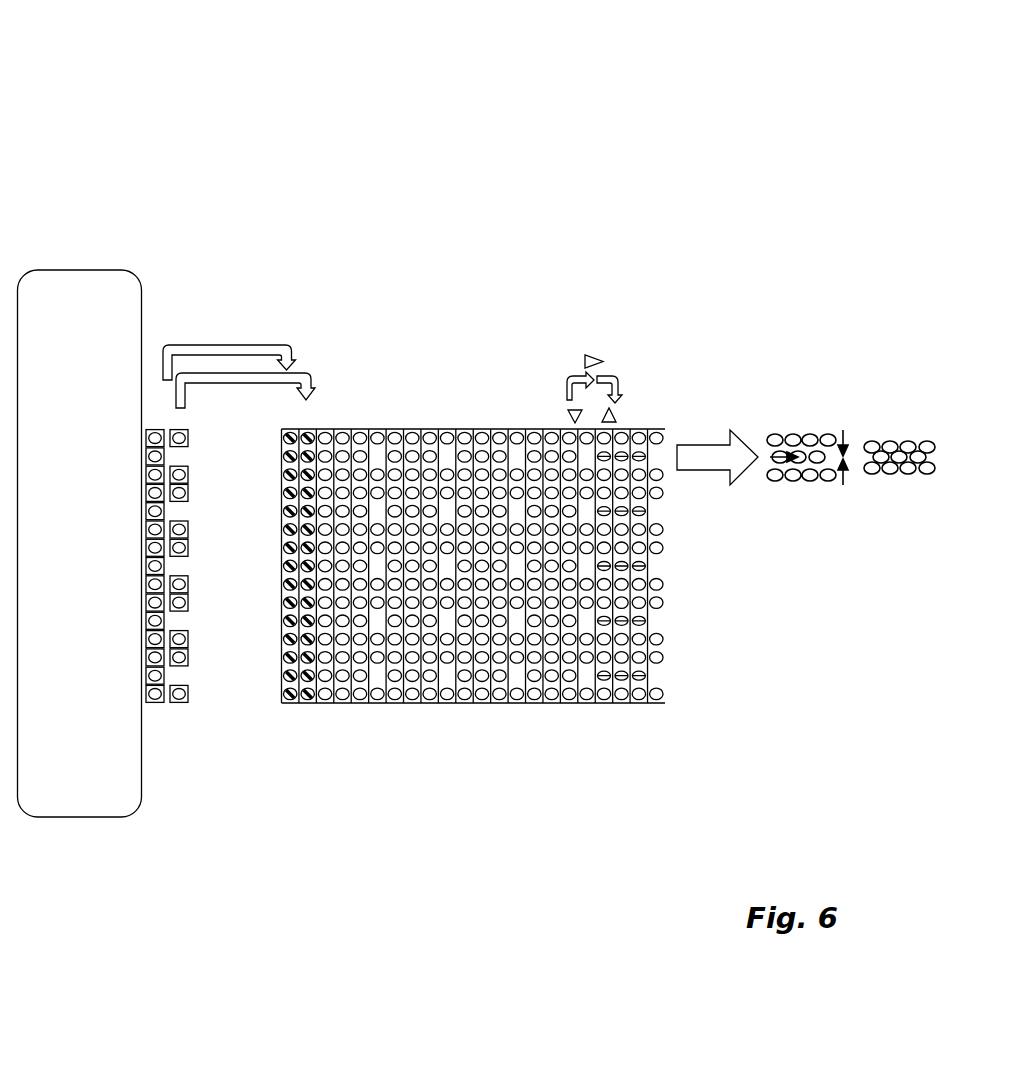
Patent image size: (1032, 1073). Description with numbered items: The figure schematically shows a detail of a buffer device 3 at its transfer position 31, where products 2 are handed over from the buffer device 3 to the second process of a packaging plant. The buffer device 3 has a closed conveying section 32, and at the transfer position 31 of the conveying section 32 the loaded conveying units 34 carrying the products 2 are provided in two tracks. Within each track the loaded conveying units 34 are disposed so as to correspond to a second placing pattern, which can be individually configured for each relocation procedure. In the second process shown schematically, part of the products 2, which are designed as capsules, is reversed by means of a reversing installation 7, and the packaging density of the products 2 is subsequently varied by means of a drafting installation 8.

The buffer device 3 is at (142, 141).
The conveying section 32 is at (43, 818).
The transfer position 31 is at (215, 627).
The conveying units 34 is at (183, 705).
The products 2 is at (513, 701).
The reversing installation 7 is at (591, 319).
The drafting installation 8 is at (816, 364).